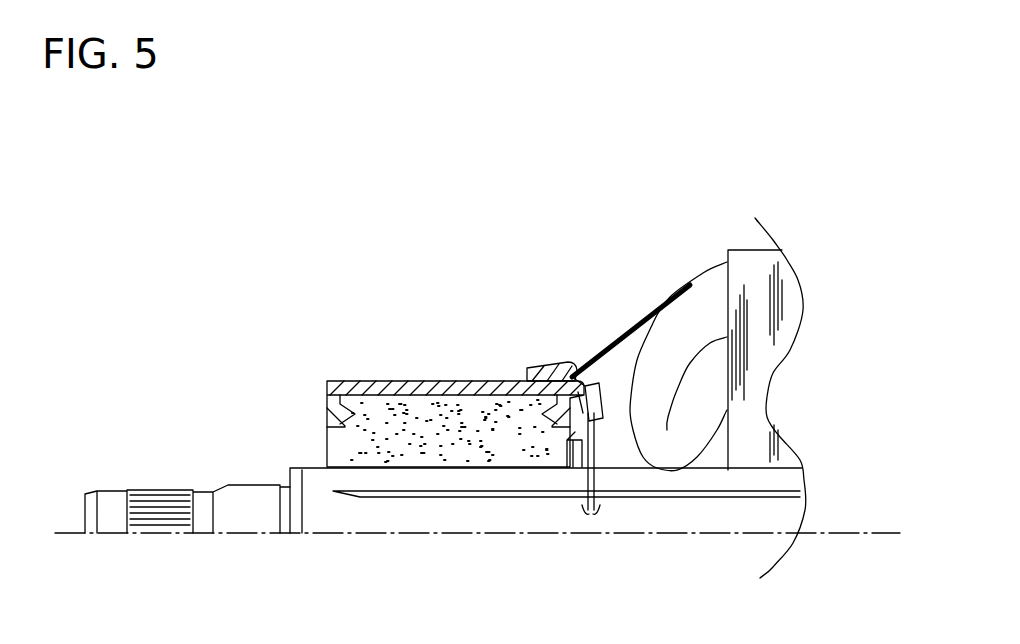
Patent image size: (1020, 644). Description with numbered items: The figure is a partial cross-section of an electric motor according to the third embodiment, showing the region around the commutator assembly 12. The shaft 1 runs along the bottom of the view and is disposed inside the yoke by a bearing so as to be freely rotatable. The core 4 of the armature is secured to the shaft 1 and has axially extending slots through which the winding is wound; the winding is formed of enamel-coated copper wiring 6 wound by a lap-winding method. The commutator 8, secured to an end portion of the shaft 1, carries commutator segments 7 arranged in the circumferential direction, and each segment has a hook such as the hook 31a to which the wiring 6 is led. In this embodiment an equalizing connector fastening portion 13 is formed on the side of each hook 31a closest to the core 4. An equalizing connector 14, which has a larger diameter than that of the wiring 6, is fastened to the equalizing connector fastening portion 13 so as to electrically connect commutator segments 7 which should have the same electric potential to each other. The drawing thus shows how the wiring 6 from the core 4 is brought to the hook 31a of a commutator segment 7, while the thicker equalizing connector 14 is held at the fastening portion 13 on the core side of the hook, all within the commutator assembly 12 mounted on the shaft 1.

The shaft 1 is at (460, 517).
The core 4 is at (748, 265).
The wiring 6 is at (687, 287).
The commutator segments 7 is at (426, 388).
The commutator 8 is at (388, 455).
The commutator assembly 12 is at (455, 389).
The equalizing connector fastening portions 13 is at (604, 398).
The equalizing connectors 14 is at (595, 485).
The hook 31a is at (550, 368).